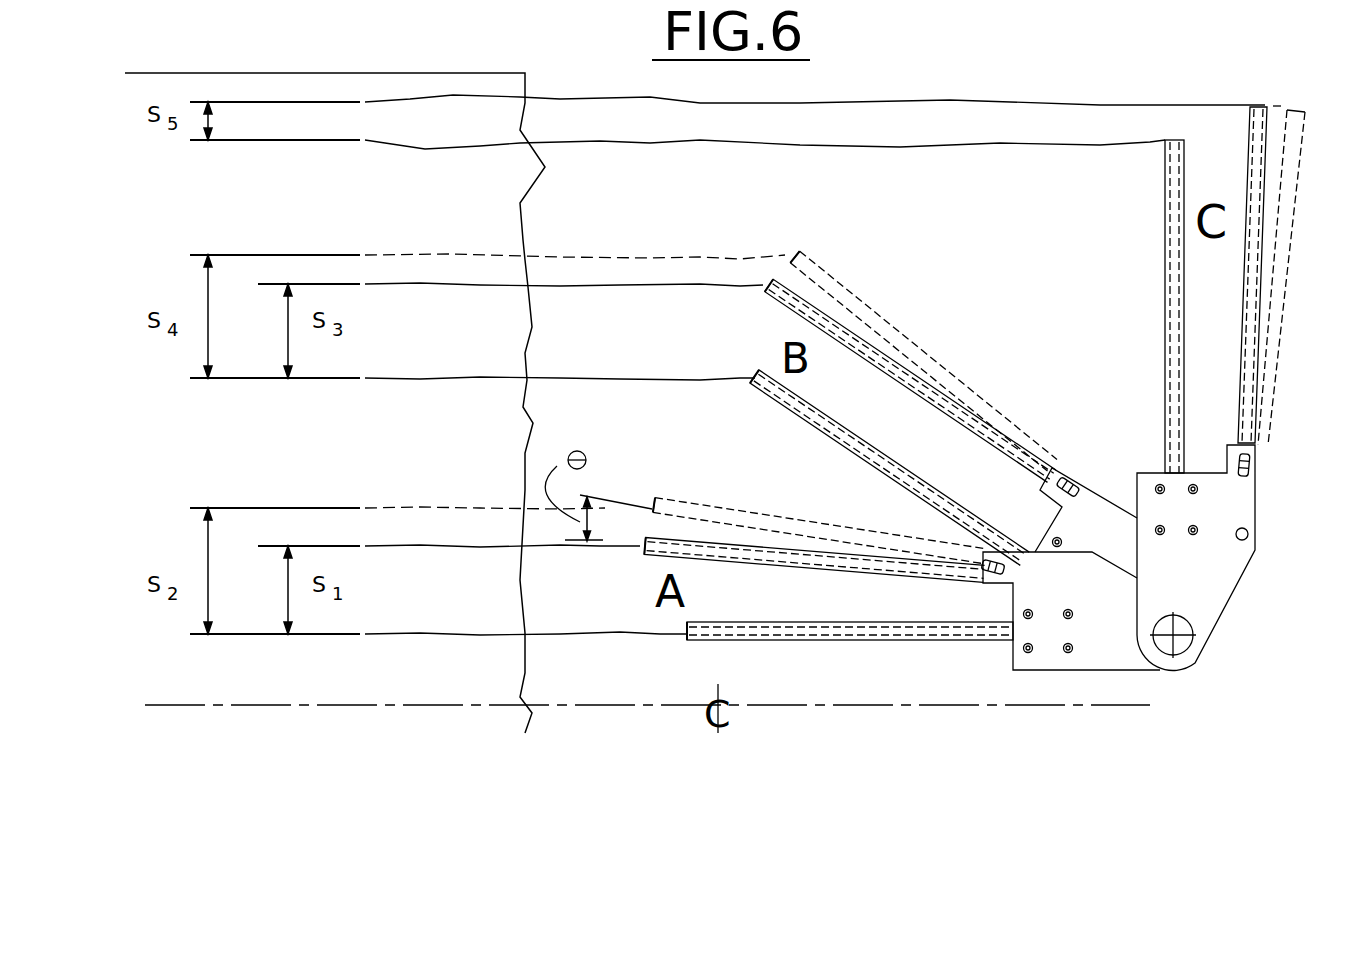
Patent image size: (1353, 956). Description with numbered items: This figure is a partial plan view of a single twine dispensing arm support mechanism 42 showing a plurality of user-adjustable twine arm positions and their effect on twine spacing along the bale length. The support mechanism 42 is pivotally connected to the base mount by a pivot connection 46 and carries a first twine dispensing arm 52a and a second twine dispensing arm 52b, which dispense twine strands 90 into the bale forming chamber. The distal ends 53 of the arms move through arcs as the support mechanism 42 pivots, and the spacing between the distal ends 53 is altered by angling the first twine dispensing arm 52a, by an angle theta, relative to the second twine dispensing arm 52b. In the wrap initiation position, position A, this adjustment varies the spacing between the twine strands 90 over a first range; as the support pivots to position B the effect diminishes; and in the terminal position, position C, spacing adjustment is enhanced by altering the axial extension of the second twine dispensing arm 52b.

The twine dispensing arm support mechanism 42 is at (1203, 582).
The pivot connection 46 is at (1170, 645).
The first twine dispensing arm 52a is at (760, 555).
The second twine dispensing arm 52b is at (812, 637).
The distal ends 53 is at (685, 632).
The twine strands 90 is at (652, 253).